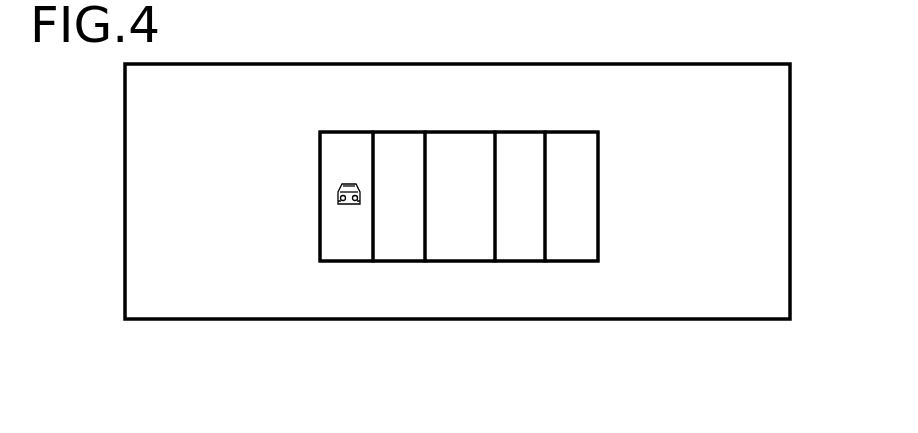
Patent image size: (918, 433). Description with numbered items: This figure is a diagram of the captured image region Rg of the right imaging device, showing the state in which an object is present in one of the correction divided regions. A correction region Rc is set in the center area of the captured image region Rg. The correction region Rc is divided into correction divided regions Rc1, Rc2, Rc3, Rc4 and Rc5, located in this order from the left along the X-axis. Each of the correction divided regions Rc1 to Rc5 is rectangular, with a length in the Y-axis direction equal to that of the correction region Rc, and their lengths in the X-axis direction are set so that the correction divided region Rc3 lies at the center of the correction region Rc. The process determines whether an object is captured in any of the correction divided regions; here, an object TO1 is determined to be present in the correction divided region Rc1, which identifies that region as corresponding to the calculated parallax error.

The captured image region Rg is at (620, 321).
The correction region Rc is at (611, 164).
The correction divided region Rc1 is at (345, 148).
The correction divided region Rc2 is at (408, 148).
The correction divided region Rc3 is at (470, 148).
The correction divided region Rc4 is at (532, 148).
The correction divided region Rc5 is at (587, 148).
The object TO1 is at (336, 195).